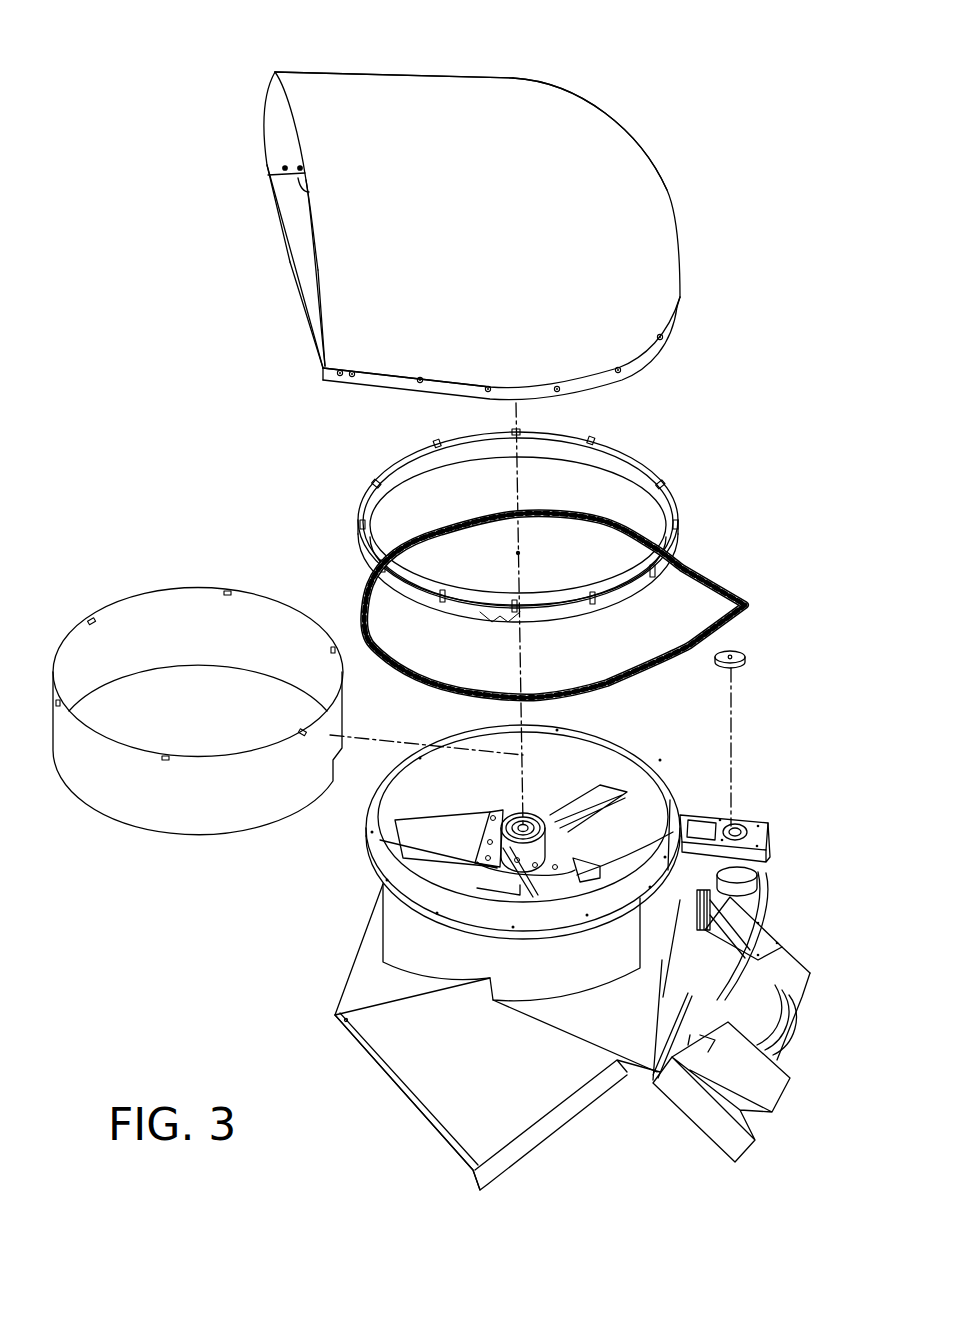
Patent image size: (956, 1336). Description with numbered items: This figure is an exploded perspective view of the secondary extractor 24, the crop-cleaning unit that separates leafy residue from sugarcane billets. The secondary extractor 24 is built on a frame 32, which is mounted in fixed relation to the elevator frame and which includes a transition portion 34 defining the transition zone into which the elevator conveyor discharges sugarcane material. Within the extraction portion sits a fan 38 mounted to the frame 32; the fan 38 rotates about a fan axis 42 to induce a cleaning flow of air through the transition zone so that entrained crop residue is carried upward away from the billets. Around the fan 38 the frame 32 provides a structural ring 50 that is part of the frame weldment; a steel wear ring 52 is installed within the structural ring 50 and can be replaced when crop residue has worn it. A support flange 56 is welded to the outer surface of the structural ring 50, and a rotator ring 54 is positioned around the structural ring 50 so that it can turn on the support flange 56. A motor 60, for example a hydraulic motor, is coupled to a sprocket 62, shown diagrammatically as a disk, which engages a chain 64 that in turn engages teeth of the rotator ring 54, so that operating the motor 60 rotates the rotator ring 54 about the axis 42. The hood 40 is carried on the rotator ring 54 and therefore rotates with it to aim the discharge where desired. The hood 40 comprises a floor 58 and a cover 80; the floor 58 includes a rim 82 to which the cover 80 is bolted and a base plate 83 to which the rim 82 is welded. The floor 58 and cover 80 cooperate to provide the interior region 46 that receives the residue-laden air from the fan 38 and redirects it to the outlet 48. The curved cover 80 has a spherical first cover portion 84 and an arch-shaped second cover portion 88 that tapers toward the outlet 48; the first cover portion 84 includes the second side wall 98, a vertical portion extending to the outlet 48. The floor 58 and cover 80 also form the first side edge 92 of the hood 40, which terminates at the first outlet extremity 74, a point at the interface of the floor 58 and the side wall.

The secondary extractor 24 is at (127, 194).
The frame 32 is at (443, 1075).
The transition portion 34 is at (478, 1037).
The fan 38 is at (586, 808).
The hood 40 is at (684, 197).
The fan axis 42 is at (517, 553).
The interior region 46 is at (295, 212).
The outlet 48 is at (315, 243).
The structural ring 50 is at (551, 958).
The wear ring 52 is at (160, 795).
The rotator ring 54 is at (665, 500).
The support flange 56 is at (487, 931).
The floor 58 is at (316, 296).
The motor 60 is at (736, 881).
The sprocket 62 is at (746, 658).
The chain 64 is at (706, 572).
The first outlet extremity 74 is at (280, 178).
The cover 80 is at (530, 97).
The rim 82 is at (378, 384).
The base plate 83 is at (312, 267).
The first cover portion 84 is at (580, 143).
The second cover portion 88 is at (355, 92).
The first side edge 92 is at (298, 177).
The second side wall 98 is at (378, 362).